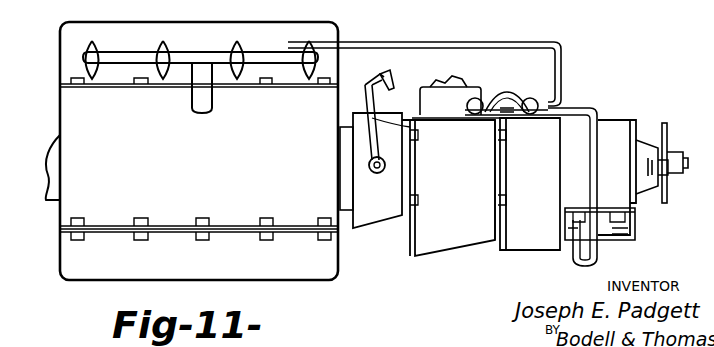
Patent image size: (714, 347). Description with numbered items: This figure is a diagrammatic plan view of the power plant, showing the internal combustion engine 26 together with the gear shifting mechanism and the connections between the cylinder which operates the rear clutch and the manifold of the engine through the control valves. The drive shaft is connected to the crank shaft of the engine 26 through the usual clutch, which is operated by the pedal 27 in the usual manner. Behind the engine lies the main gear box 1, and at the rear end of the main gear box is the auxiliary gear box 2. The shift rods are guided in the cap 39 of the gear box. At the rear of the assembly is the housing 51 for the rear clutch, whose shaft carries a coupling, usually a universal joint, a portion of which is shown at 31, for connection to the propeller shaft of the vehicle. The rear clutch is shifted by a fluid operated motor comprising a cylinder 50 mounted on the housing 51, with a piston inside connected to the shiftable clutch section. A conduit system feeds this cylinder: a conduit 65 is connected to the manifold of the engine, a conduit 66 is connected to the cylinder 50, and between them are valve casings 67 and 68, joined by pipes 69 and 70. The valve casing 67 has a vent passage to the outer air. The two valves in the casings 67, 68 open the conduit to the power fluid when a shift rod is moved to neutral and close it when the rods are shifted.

The main gear box 1 is at (440, 258).
The auxiliary gear box 2 is at (512, 252).
The engine 26 is at (70, 104).
The pedal 27 is at (392, 88).
The coupling portion 31 is at (670, 134).
The cap 39 is at (476, 95).
The cylinder 50 is at (569, 238).
The housing 51 is at (618, 120).
The conduit 65 is at (559, 46).
The conduit 66 is at (594, 116).
The valve casing 67 is at (471, 112).
The valve casing 68 is at (534, 101).
The pipe 69 is at (506, 113).
The pipe 70 is at (502, 96).